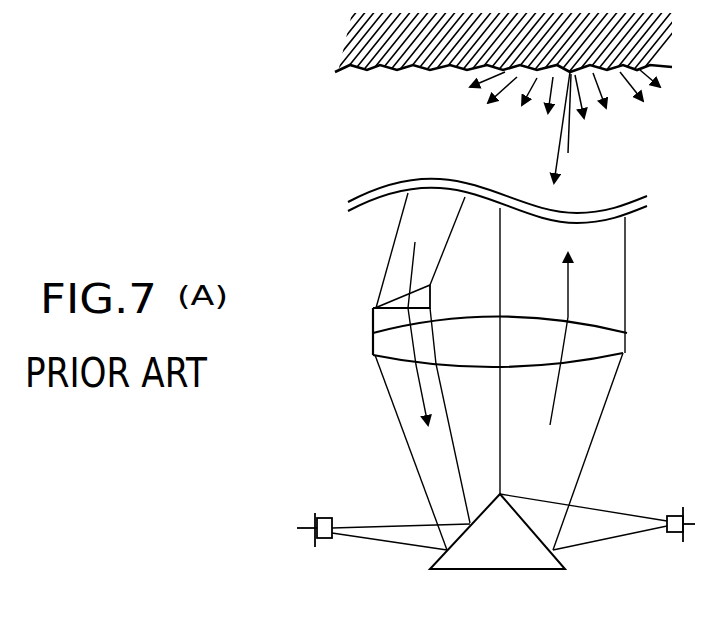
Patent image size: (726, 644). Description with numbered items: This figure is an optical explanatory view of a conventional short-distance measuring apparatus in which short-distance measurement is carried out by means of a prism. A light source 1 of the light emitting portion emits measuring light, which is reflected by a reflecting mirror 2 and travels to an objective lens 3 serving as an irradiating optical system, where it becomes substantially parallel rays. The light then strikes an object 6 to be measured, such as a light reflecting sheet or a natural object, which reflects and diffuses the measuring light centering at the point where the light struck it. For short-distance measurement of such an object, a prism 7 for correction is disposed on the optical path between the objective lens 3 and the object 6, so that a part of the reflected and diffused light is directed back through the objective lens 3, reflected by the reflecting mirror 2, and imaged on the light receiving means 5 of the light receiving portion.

The light source 1 is at (673, 516).
The reflecting mirror 2 is at (503, 560).
The objective lens 3 is at (613, 342).
The light receiving means 5 is at (323, 517).
The object to be measured 6 is at (645, 40).
The prism 7 is at (392, 298).